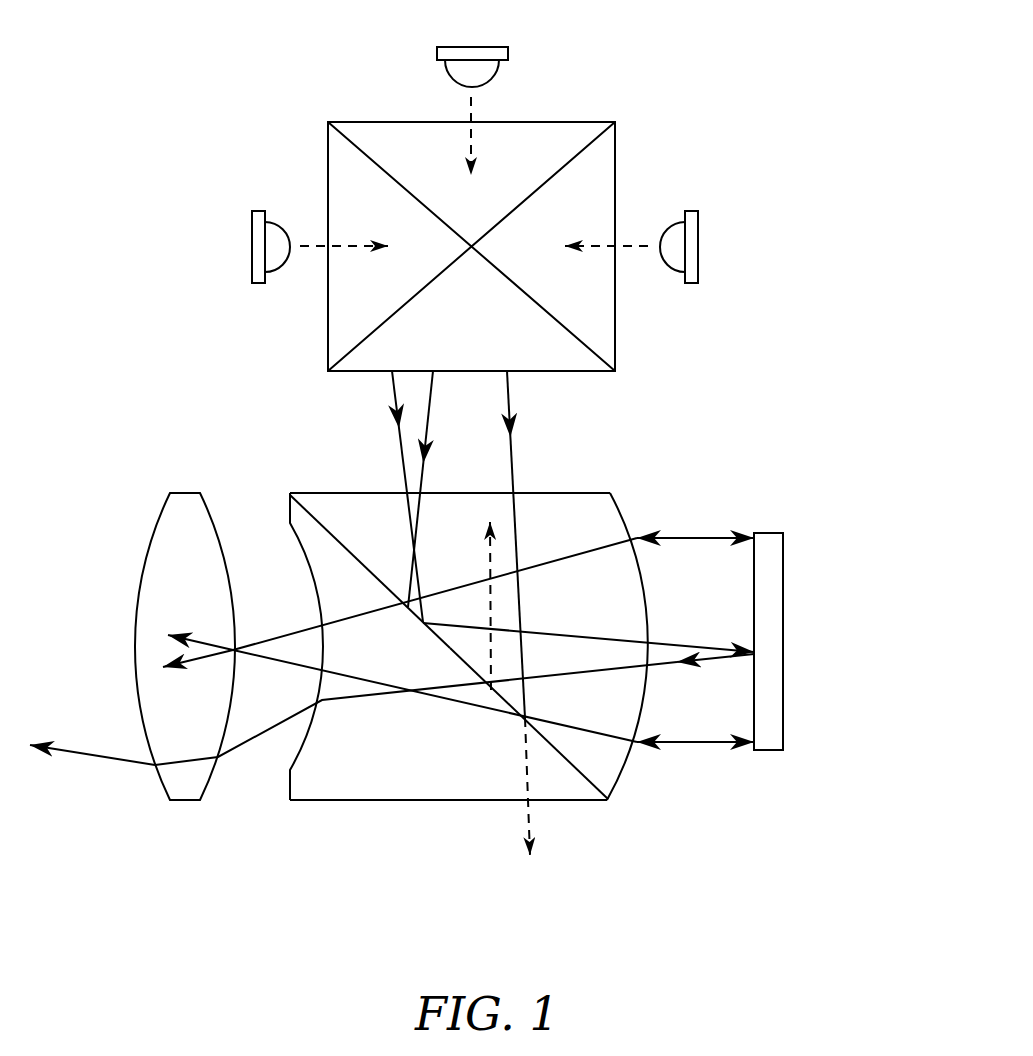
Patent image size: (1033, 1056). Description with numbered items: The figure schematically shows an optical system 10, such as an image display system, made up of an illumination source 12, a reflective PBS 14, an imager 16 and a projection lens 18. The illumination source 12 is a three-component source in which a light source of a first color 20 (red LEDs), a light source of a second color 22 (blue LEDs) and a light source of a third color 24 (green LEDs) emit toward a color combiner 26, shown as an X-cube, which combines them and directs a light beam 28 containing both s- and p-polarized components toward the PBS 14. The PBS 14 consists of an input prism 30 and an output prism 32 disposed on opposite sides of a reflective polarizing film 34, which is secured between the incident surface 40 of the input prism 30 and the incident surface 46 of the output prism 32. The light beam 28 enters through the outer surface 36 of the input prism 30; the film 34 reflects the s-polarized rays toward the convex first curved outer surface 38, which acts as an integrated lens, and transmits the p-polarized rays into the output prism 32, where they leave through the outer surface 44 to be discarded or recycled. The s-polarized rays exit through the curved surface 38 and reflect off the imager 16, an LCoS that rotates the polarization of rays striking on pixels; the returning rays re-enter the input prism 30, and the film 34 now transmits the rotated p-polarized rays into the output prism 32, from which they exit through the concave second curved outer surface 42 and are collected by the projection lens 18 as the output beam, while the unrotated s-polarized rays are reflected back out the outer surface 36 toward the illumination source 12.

The optical system 10 is at (235, 55).
The illumination source 12 is at (647, 87).
The PBS 14 is at (645, 895).
The imager 16 is at (772, 604).
The projection lens 18 is at (183, 783).
The light source of a first color 20 is at (277, 245).
The light source of a second color 22 is at (485, 68).
The light source of a third color 24 is at (677, 250).
The color combiner 26 is at (600, 165).
The light beam 28 is at (370, 412).
The input prism 30 is at (615, 490).
The output prism 32 is at (332, 808).
The reflective polarizing film 34 is at (583, 795).
The outer surface 36 is at (583, 493).
The first curved outer surface 38 is at (616, 782).
The incident surface 40 is at (327, 527).
The second curved outer surface 42 is at (297, 755).
The outer surface 44 is at (387, 803).
The incident surface 46 is at (568, 762).